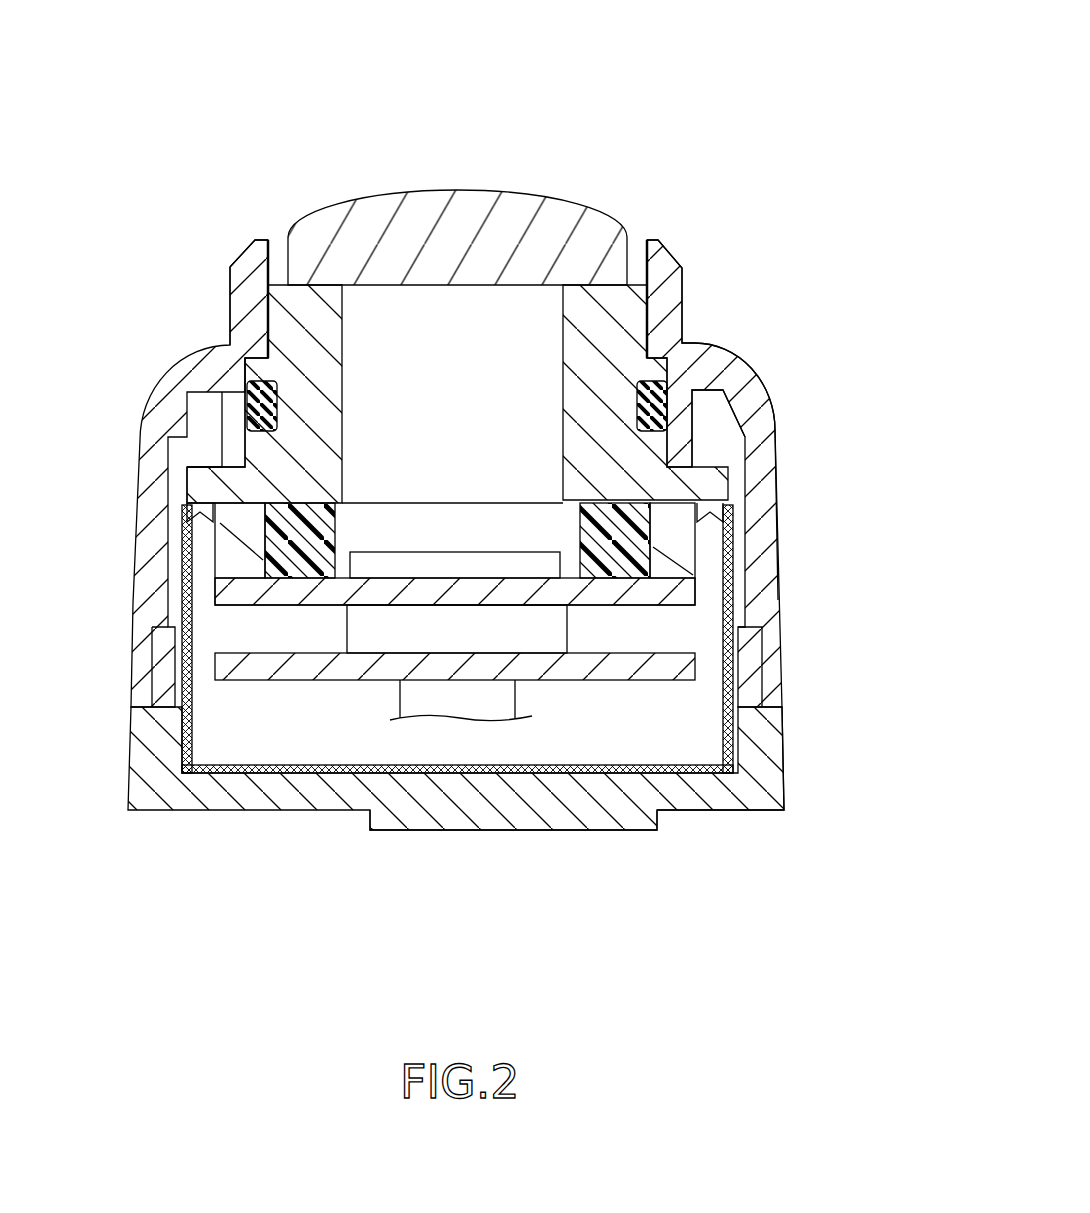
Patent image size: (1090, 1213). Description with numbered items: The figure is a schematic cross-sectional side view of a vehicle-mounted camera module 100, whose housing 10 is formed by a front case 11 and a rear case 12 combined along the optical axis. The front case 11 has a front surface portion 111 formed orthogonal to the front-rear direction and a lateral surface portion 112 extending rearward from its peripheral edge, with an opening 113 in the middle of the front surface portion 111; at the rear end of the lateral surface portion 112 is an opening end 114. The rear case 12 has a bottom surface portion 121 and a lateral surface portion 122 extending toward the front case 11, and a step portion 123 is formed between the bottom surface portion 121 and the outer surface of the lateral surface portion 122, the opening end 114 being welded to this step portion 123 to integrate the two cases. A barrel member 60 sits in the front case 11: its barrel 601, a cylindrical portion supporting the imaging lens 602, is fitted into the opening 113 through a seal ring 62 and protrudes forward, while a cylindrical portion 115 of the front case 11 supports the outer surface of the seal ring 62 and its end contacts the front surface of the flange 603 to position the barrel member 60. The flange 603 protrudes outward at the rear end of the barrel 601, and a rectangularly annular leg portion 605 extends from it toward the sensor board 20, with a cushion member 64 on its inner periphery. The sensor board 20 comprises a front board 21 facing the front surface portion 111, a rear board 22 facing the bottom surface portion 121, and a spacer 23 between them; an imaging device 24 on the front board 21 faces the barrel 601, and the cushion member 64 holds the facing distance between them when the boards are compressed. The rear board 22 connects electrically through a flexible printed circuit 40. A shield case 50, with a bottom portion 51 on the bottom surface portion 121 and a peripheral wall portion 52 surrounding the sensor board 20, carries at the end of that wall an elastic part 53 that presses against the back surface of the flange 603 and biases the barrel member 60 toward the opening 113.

The camera module 100 is at (735, 77).
The housing 10 is at (70, 598).
The front case 11 is at (140, 632).
The rear case 12 is at (130, 772).
The front surface portion 111 is at (680, 343).
The lateral surface portion 112 is at (775, 410).
The opening 113 is at (289, 240).
The cylindrical portion 115 is at (700, 447).
The bottom surface portion 121 is at (676, 812).
The lateral surface portion 122 is at (762, 663).
The opening end 114 is at (777, 712).
The step portion 123 is at (720, 758).
The barrel member 60 is at (677, 131).
The barrel 601 is at (640, 237).
The imaging lens 602 is at (508, 196).
The flange 603 is at (212, 458).
The leg portion 605 is at (225, 548).
The seal ring 62 is at (247, 395).
The cushion member 64 is at (622, 563).
The imaging device 24 is at (418, 552).
The shield case 50 is at (838, 488).
The bottom portion 51 is at (658, 775).
The peripheral wall portion 52 is at (645, 556).
The elastic part 53 is at (722, 512).
The sensor board 20 is at (400, 960).
The front board 21 is at (280, 604).
The rear board 22 is at (388, 640).
The spacer 23 is at (400, 683).
The flexible printed circuit 40 is at (461, 700).